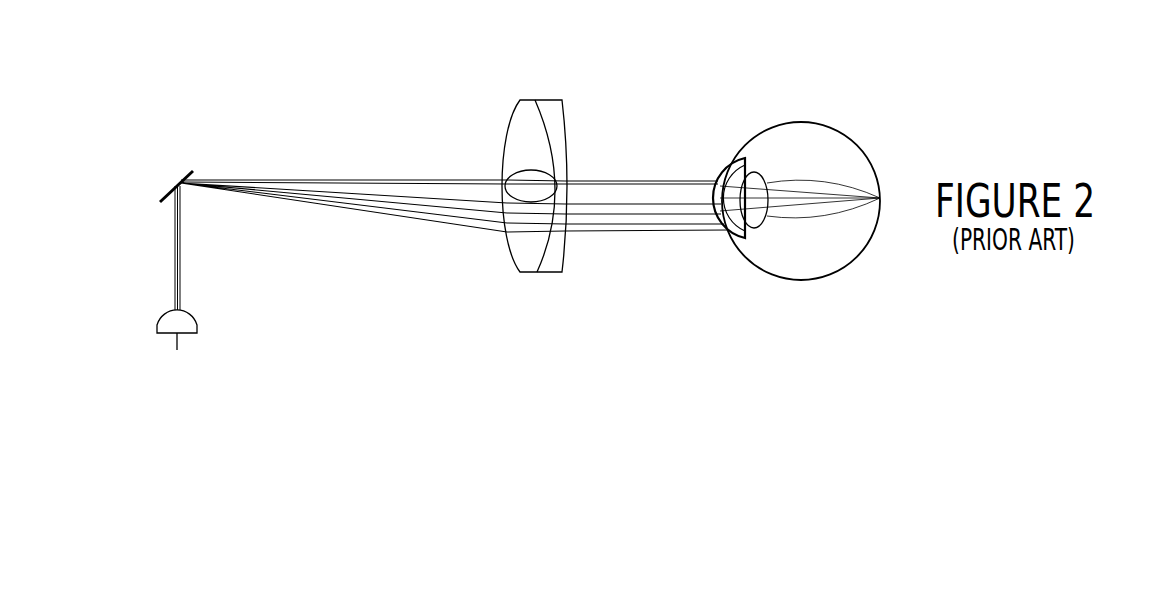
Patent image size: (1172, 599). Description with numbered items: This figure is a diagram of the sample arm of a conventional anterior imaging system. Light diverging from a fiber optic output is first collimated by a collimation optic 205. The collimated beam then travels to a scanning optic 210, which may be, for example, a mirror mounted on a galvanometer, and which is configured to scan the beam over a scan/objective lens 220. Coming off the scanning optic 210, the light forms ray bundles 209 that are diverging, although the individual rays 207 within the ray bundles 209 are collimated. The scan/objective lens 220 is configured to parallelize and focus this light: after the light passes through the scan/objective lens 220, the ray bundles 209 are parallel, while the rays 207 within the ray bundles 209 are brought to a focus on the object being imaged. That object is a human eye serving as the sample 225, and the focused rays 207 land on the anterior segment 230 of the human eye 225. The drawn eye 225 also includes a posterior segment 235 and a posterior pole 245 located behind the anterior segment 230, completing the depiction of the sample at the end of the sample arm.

The collimation optic 205 is at (177, 287).
The rays 207 is at (453, 178).
The ray bundles 209 is at (400, 203).
The scanning optic 210 is at (189, 170).
The scan/objective lens 220 is at (537, 273).
The human eye 225 is at (818, 88).
The anterior segment 230 is at (722, 172).
The posterior segment 235 is at (780, 218).
The posterior pole 245 is at (852, 233).